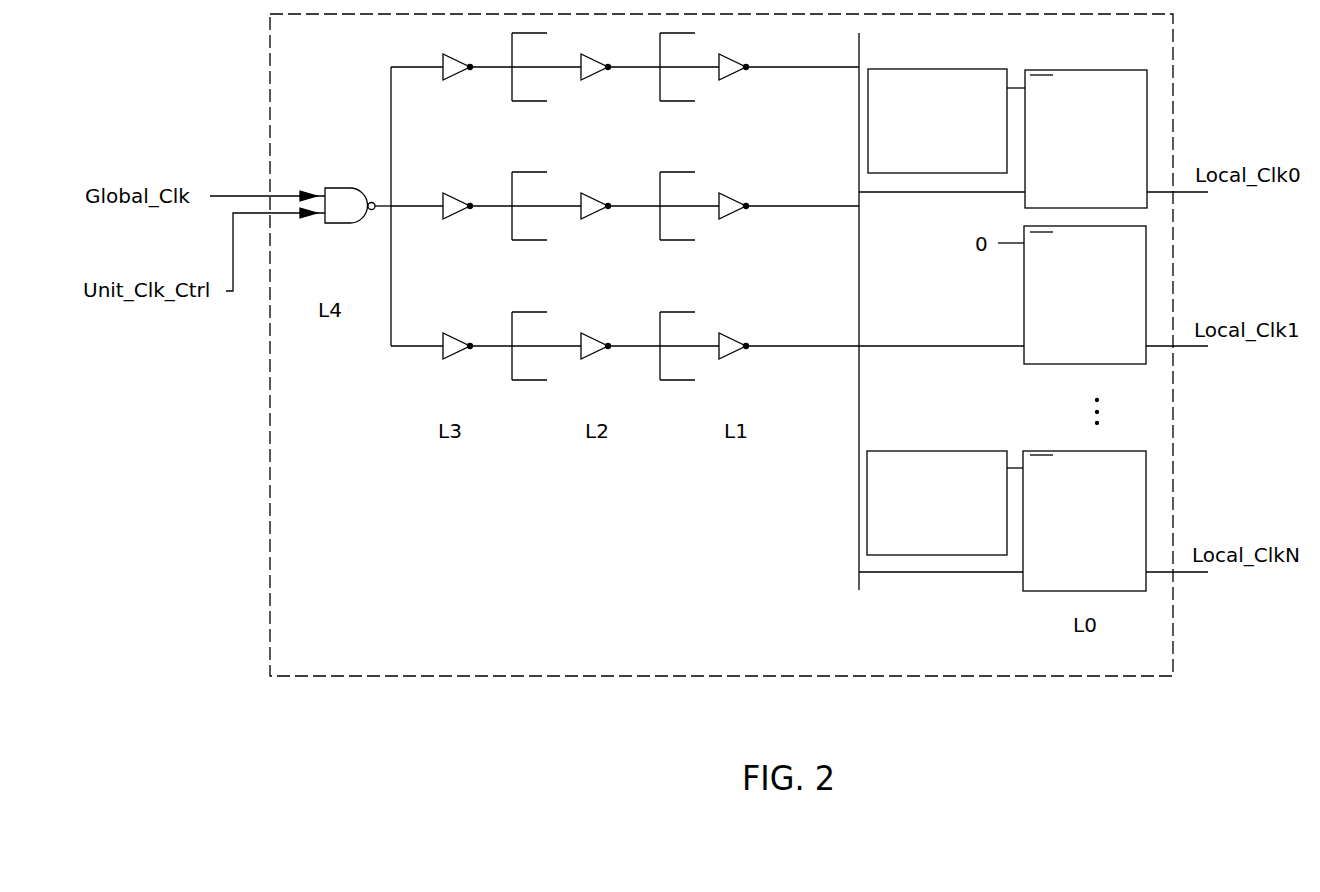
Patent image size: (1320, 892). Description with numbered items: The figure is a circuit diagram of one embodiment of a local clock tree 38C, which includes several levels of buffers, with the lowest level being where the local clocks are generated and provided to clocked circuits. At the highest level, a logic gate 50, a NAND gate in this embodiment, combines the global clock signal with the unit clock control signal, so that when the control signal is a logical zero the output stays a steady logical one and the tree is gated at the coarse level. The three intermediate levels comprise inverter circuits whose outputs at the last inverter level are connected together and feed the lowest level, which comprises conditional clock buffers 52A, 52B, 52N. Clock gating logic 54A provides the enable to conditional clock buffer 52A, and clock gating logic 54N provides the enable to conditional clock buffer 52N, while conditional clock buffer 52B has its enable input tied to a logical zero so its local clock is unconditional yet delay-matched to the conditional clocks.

The local clock tree 38C is at (1163, 51).
The logic gate 50 is at (338, 203).
The conditional clock buffer 52A is at (1132, 101).
The conditional clock buffer 52B is at (1131, 256).
The conditional clock buffer 52N is at (1131, 479).
The clock gating logic 54A is at (989, 149).
The clock gating logic 54N is at (989, 529).